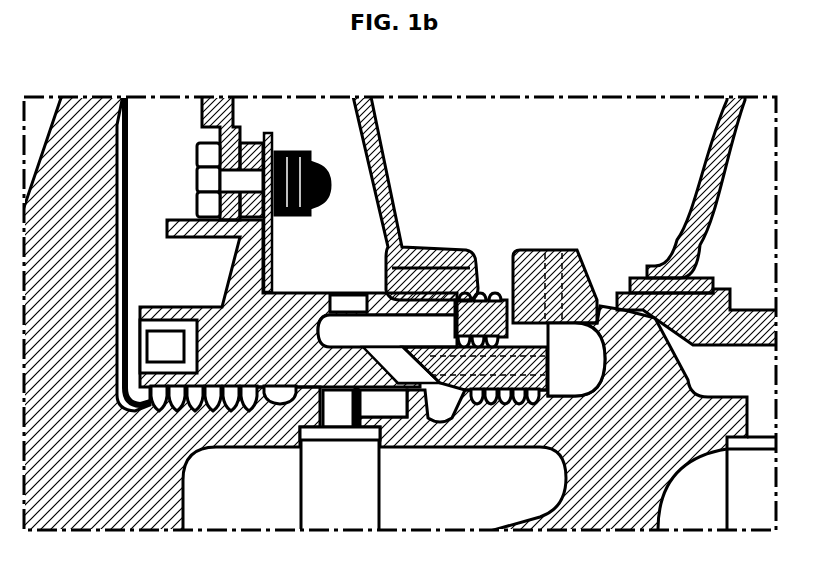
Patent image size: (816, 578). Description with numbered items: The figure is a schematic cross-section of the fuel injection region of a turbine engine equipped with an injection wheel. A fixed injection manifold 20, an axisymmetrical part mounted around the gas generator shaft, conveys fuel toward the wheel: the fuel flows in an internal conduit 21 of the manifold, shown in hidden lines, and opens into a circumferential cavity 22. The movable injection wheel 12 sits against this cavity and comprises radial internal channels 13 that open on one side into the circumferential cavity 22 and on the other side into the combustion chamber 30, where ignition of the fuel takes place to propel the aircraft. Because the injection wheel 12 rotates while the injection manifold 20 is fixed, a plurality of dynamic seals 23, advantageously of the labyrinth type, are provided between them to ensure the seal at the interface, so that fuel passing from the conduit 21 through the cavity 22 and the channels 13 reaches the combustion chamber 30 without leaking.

The injection wheel 12 is at (642, 453).
The radial internal channels 13 is at (553, 283).
The injection manifold 20 is at (272, 353).
The internal conduit 21 is at (476, 372).
The circumferential cavity 22 is at (578, 357).
The labyrinth seals 23 is at (533, 397).
The combustion chamber 30 is at (561, 181).